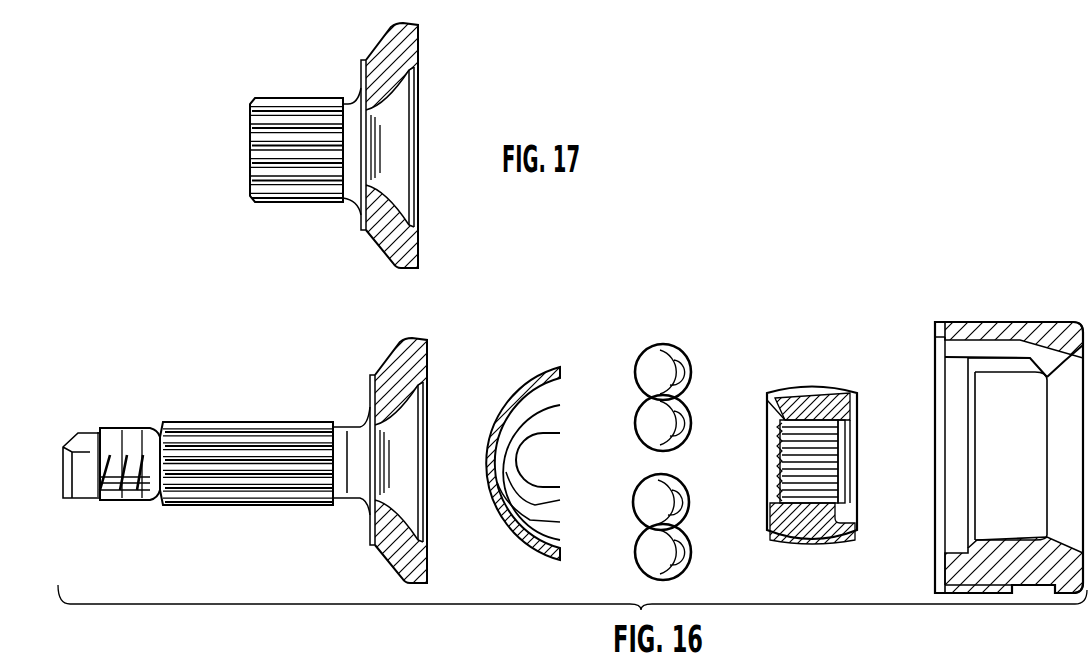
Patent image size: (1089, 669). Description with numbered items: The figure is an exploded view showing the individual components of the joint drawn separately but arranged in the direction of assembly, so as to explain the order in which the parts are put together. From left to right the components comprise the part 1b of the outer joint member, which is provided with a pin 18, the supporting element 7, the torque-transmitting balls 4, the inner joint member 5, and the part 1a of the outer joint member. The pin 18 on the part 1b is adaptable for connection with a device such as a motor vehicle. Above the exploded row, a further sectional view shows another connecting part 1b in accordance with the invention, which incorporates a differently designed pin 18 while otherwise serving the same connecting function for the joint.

In FIG. 17, the pin 18 is at (293, 172).
In FIG. 16, the pin 18 is at (288, 447).
In FIG. 17, the part of the outer joint member 1b is at (376, 232).
In FIG. 16, the part of the outer joint member 1b is at (397, 380).
In FIG. 16, the supporting element 7 is at (523, 392).
In FIG. 16, the torque-transmitting balls 4 is at (652, 362).
In FIG. 16, the inner joint member 5 is at (808, 400).
In FIG. 16, the part of the outer joint member 1a is at (957, 330).